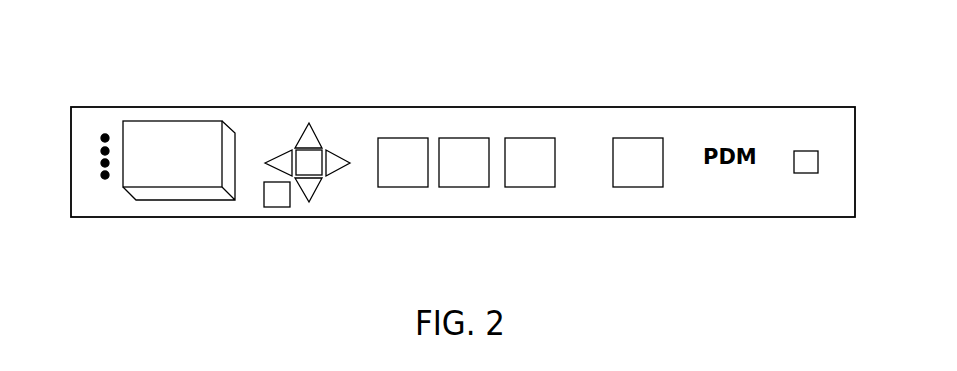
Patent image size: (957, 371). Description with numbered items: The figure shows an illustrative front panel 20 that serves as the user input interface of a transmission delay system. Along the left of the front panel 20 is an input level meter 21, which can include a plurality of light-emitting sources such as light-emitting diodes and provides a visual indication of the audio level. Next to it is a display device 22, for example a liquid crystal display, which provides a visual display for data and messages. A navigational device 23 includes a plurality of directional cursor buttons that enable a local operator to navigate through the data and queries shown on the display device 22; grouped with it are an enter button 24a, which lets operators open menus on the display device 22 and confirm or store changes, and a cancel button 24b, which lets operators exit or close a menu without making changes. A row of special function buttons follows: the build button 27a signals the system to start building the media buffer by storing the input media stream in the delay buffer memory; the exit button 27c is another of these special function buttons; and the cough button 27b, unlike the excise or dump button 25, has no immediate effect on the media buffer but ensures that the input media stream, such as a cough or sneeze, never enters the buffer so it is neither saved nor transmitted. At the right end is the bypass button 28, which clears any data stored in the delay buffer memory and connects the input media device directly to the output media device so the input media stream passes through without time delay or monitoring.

The front panel 20 is at (71, 85).
The input level meter 21 is at (101, 186).
The display device 22 is at (170, 202).
The navigational device 23 is at (312, 172).
The enter device (button) 24a is at (313, 149).
The cancel device (button) 24b is at (273, 208).
The excise device (button) 25 is at (637, 188).
The build button 27a is at (400, 188).
The cough button 27b is at (530, 188).
The exit button 27c is at (462, 188).
The bypass device (button) 28 is at (803, 178).